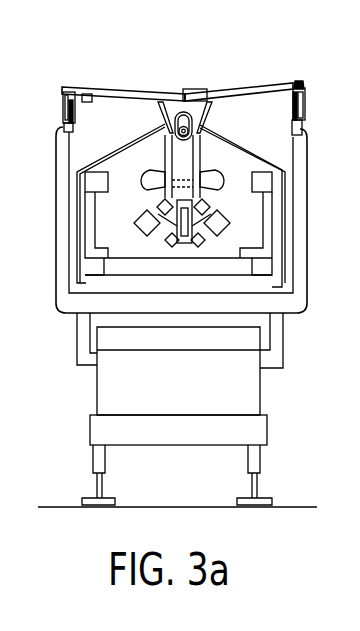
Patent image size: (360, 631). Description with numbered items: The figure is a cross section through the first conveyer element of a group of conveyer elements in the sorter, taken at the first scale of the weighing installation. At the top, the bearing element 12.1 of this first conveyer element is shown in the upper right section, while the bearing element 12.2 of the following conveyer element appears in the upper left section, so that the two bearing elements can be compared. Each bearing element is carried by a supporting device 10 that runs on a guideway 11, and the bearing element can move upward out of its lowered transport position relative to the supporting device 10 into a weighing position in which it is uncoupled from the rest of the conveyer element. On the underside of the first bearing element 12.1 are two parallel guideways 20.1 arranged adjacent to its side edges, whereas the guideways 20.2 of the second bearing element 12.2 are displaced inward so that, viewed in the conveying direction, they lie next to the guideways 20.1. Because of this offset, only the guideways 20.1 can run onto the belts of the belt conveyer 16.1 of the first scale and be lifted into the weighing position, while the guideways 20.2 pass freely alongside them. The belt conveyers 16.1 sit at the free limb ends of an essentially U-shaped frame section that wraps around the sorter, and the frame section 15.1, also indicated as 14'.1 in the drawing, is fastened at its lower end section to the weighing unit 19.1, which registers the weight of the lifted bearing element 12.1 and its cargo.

The supporting device 10 is at (209, 160).
The guideway 11 is at (243, 206).
The bearing element 12.1 is at (227, 89).
The bearing element 12.2 is at (115, 91).
The machine frame / stand 14'.1 is at (172, 410).
The housing 15.1 is at (54, 282).
The belt conveyer 16.1 is at (61, 102).
The weighing unit 19.1 is at (213, 395).
The guideways 20.1 is at (296, 84).
The guideways 20.2 is at (87, 102).